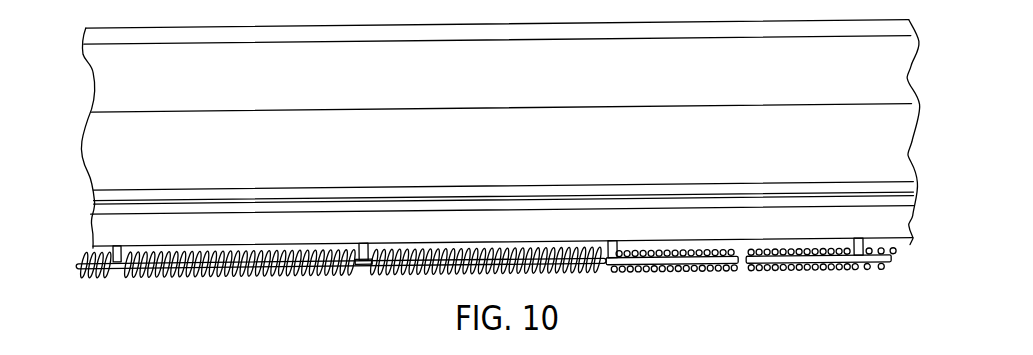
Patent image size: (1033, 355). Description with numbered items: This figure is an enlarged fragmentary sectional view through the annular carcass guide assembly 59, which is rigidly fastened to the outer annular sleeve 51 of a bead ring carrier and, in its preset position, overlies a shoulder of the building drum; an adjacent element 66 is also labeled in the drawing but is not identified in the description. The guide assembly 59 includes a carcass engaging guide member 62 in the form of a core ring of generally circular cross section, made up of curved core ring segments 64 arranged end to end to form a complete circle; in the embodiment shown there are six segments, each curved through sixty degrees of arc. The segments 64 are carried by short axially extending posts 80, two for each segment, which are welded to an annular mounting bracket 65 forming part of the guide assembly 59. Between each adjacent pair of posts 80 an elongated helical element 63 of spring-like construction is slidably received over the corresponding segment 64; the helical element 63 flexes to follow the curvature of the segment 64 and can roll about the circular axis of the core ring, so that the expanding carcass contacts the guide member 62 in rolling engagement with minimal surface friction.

The outer annular sleeve 51 is at (100, 59).
The panel section 66 is at (101, 131).
The annular carcass guide assembly 59 is at (92, 202).
The annular mounting bracket 65 is at (118, 211).
The post 80 is at (112, 249).
The carcass engaging guide member 62 is at (407, 278).
The elongated helical element 63 is at (135, 270).
The curved core ring segment 64 is at (263, 278).